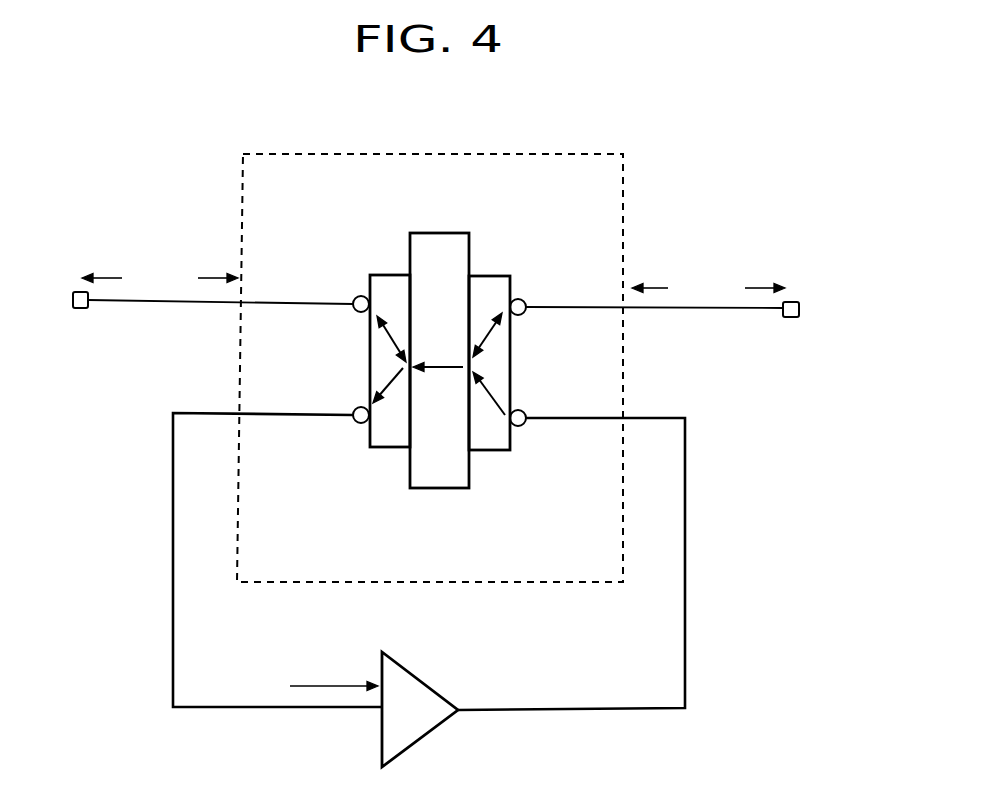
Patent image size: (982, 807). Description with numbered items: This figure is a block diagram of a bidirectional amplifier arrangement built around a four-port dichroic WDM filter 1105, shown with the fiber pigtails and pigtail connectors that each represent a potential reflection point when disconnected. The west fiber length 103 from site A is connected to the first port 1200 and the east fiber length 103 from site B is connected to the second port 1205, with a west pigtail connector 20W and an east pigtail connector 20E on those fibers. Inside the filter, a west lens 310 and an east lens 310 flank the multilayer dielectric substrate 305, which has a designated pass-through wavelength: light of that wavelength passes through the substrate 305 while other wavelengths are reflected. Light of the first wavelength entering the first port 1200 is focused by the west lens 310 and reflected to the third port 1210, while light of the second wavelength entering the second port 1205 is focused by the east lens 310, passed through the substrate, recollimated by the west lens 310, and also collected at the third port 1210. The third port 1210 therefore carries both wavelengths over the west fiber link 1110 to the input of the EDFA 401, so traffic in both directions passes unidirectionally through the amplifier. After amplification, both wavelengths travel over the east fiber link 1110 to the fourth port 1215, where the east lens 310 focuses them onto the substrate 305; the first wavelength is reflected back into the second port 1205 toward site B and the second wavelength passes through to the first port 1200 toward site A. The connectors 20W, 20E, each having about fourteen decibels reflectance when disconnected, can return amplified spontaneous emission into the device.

The 4-port WDM filter 1105 is at (561, 150).
The lens 310 is at (520, 492).
The multilayer dielectric substrate 305 is at (408, 477).
The port 1 1200 is at (355, 298).
The port 2 1205 is at (523, 314).
The port 3 1210 is at (355, 408).
The port 4 1215 is at (522, 426).
The fiber length 103 is at (122, 302).
The west pigtail connector 20W is at (76, 292).
The east pigtail connector 20E is at (797, 302).
The fiber link 1110 is at (171, 593).
The EDFA 401 is at (440, 690).